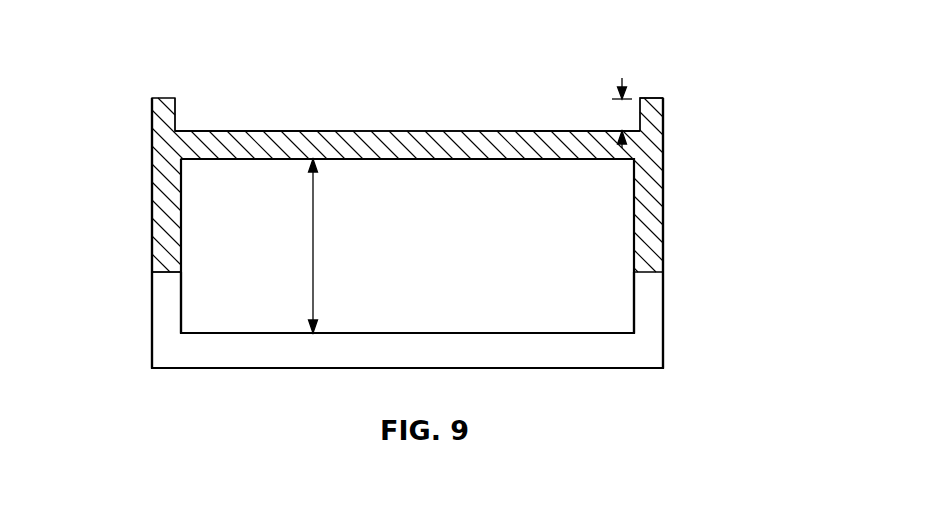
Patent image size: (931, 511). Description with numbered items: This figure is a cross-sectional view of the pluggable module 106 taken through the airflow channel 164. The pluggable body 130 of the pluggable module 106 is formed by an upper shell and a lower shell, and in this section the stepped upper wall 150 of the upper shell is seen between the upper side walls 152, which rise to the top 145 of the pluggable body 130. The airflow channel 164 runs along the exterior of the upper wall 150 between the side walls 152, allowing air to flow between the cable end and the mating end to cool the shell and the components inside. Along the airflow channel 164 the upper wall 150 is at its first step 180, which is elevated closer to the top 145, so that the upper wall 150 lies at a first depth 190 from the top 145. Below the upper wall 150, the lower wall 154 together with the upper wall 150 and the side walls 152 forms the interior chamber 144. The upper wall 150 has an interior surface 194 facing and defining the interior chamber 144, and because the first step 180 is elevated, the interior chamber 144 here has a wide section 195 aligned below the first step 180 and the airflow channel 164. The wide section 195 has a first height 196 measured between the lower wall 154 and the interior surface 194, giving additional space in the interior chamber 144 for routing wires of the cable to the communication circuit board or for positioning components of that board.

The pluggable module 106 is at (135, 58).
The pluggable body 130 is at (153, 252).
The interior chamber 144 is at (594, 282).
The top 145 is at (622, 78).
The upper wall 150 is at (258, 133).
The upper side walls 152 is at (664, 186).
The lower wall 154 is at (508, 352).
The airflow channel 164 is at (206, 118).
The first step 180 is at (573, 131).
The first depth 190 is at (655, 98).
The interior surface 194 is at (237, 160).
The wide section 195 is at (206, 293).
The first height 196 is at (313, 268).